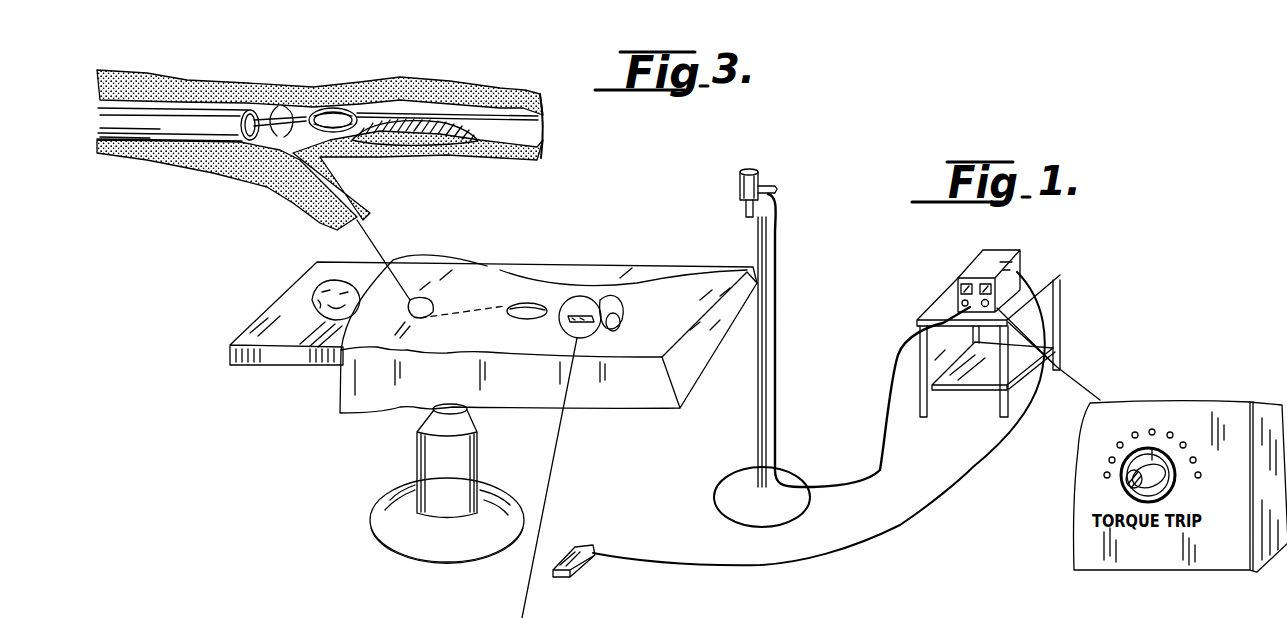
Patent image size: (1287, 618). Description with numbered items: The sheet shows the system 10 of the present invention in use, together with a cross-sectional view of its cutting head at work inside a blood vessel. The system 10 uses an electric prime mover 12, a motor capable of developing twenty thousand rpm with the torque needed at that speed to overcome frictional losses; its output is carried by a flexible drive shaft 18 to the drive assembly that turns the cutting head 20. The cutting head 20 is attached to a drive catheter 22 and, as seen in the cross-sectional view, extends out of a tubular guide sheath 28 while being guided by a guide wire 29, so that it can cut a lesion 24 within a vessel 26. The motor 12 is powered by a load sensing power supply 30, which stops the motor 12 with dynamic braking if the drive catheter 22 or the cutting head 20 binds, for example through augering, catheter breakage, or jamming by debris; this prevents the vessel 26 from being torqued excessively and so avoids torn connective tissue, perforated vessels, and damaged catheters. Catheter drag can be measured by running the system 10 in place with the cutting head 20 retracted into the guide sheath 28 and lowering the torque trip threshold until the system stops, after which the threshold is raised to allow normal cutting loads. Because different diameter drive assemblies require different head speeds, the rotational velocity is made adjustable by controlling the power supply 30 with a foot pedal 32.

In FIG. 1, the system 10 is at (795, 237).
In FIG. 1, the electric prime mover 12 is at (740, 186).
In FIG. 1, the flexible drive shaft 18 is at (752, 231).
In FIG. 3, the cutting head 20 is at (322, 108).
In FIG. 3, the drive catheter 22 is at (262, 116).
In FIG. 3, the lesion 24 is at (402, 126).
In FIG. 3, the vessel 26 is at (502, 147).
In FIG. 3, the tubular guide sheath 28 is at (178, 120).
In FIG. 3, the guide wire 29 is at (530, 107).
In FIG. 1, the load sensing power supply 30 is at (1020, 270).
In FIG. 1, the foot pedal 32 is at (590, 540).